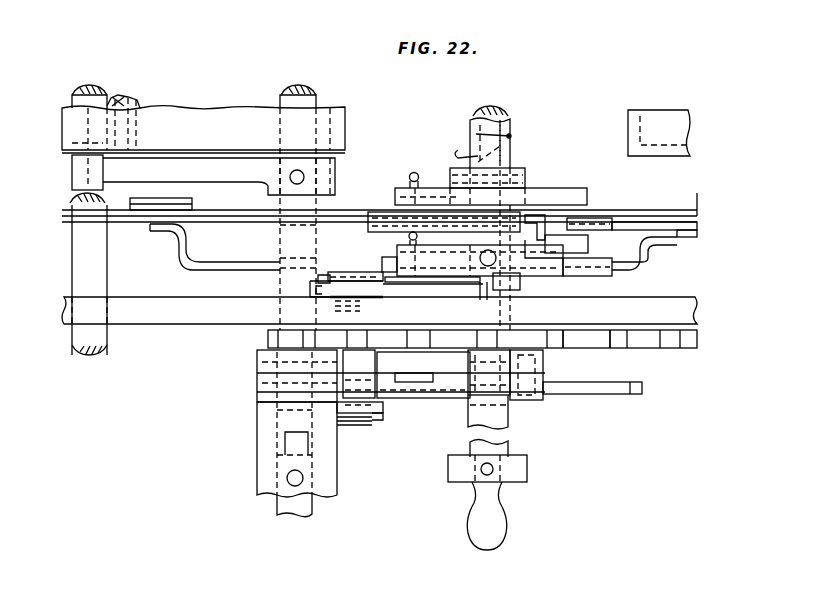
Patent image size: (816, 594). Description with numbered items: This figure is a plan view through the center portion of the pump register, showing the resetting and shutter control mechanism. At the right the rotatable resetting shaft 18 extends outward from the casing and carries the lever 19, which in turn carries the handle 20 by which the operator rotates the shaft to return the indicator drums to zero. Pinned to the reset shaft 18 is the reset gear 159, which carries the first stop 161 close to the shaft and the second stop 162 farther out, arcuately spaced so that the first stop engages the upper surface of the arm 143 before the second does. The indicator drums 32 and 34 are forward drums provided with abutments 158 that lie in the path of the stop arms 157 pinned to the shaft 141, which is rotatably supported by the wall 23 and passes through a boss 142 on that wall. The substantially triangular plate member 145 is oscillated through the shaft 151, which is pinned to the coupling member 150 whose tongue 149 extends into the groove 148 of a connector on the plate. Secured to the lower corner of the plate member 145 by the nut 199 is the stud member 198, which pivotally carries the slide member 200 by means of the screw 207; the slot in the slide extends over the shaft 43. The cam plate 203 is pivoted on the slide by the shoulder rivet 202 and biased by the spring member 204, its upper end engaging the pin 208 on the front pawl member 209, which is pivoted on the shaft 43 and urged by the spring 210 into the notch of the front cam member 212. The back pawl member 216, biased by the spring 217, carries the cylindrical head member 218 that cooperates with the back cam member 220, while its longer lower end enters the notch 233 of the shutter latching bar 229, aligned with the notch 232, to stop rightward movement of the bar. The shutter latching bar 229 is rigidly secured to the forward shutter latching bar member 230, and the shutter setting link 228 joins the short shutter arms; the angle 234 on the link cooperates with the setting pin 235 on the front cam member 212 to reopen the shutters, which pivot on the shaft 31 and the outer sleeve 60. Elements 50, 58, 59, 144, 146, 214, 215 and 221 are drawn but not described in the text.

The resetting shaft 18 is at (495, 441).
The lever 19 is at (510, 469).
The handle 20 is at (496, 535).
The wall 23 is at (379, 310).
The shaft 31 is at (70, 94).
The indicator drum 32 is at (228, 135).
The indicator drum 34 is at (628, 131).
The shaft 43 is at (476, 113).
The bracket 50 is at (476, 134).
The pin 58 is at (112, 98).
The pin 59 is at (118, 100).
The outer sleeve 60 is at (128, 101).
The shaft 141 is at (280, 93).
The boss 142 is at (262, 330).
The arm 143 is at (613, 388).
The bar 144 is at (260, 378).
The plate member 145 is at (450, 396).
The block 146 is at (416, 372).
The groove 148 is at (278, 440).
The tongue 149 is at (293, 437).
The coupling member 150 is at (258, 466).
The shaft 151 is at (277, 510).
The stop arm 157 is at (219, 176).
The abutment 158 is at (88, 162).
The reset gear 159 is at (598, 340).
The first stop 161 is at (538, 366).
The second stop 162 is at (360, 369).
The stud member 198 is at (348, 430).
The nut 199 is at (372, 425).
The slide member 200 is at (450, 287).
The shoulder rivet 202 is at (390, 284).
The cam plate 203 is at (345, 272).
The spring member 204 is at (482, 284).
The screw 207 is at (320, 279).
The pin 208 is at (406, 280).
The front pawl member 209 is at (612, 272).
The spring 210 is at (408, 238).
The front cam member 212 is at (440, 286).
The pivot 214 is at (494, 265).
The lever 215 is at (458, 240).
The back pawl member 216 is at (590, 222).
The spring 217 is at (409, 179).
The transverse cylindrical head member 218 is at (588, 245).
The back cam member 220 is at (530, 200).
The block 221 is at (525, 172).
The shutter setting link 228 is at (244, 212).
The shutter latching bar 229 is at (251, 226).
The forward shutter latching bar member 230 is at (252, 264).
The notch 232 is at (380, 265).
The notch 233 is at (393, 220).
The angle 234 is at (522, 228).
The setting pin 235 is at (528, 242).